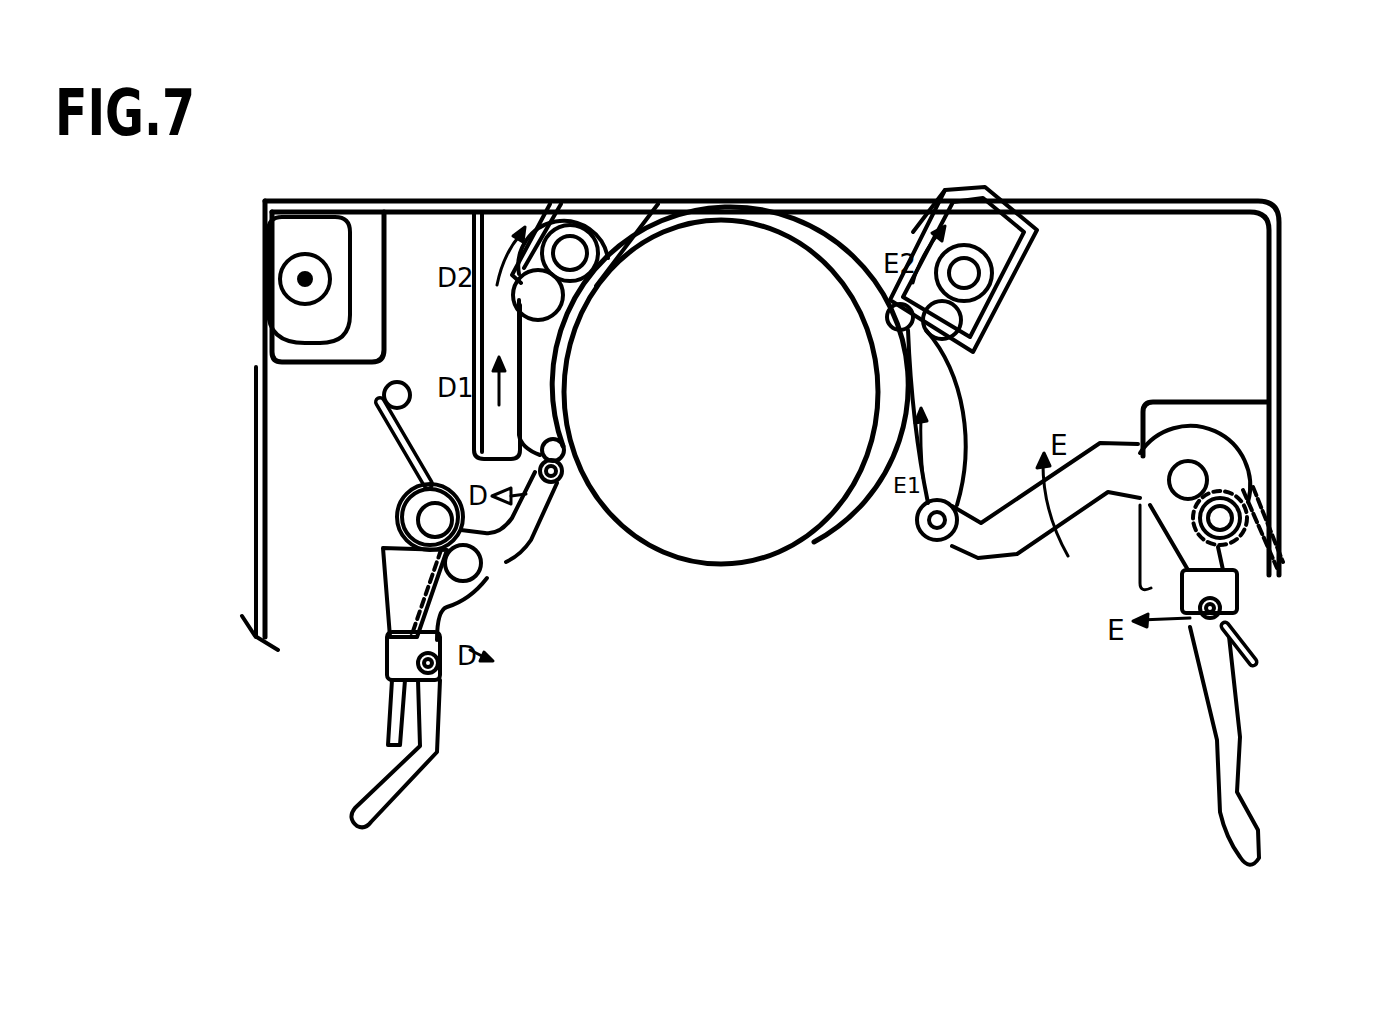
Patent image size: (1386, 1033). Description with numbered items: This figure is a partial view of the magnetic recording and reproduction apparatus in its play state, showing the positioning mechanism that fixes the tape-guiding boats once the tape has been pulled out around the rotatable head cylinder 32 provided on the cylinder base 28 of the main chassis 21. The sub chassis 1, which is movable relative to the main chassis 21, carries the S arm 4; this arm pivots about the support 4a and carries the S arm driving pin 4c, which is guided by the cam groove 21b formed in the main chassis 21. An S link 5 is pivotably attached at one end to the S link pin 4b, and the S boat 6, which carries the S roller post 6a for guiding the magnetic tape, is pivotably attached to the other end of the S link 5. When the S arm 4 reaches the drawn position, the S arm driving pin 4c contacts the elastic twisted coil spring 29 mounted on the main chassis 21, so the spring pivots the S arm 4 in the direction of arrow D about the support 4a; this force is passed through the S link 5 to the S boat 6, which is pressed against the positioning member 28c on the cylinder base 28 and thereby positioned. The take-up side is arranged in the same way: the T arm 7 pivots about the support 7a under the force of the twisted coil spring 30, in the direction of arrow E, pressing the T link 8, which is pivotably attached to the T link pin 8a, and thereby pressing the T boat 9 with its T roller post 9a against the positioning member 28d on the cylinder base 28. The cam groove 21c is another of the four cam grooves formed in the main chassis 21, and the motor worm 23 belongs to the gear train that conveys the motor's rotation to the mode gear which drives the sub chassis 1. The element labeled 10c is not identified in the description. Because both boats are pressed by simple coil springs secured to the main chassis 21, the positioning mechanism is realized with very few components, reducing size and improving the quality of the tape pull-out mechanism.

The sub chassis 1 is at (430, 237).
The S arm 4 is at (513, 545).
The support 4a is at (480, 580).
The S link pin 4b is at (528, 475).
The S arm driving pin 4c is at (440, 670).
The S link 5 is at (528, 392).
The S boat 6 is at (640, 207).
The S roller post 6a is at (597, 283).
The T arm 7 is at (1017, 517).
The support 7a is at (1190, 478).
The T link 8 is at (957, 418).
The T link pin 8a is at (937, 540).
The T boat 9 is at (990, 323).
The T roller post 9a is at (968, 273).
The pivot pin 10c is at (1193, 632).
The main chassis 21 is at (1200, 250).
The cam groove 21b is at (440, 723).
The cam groove 21c is at (1217, 757).
The motor worm 23 is at (317, 220).
The cylinder base 28 is at (503, 230).
The positioning member 28c is at (573, 223).
The positioning member 28d is at (993, 210).
The twisted coil spring 29 is at (387, 435).
The twisted coil spring 30 is at (1262, 511).
The rotatable head cylinder 32 is at (777, 223).